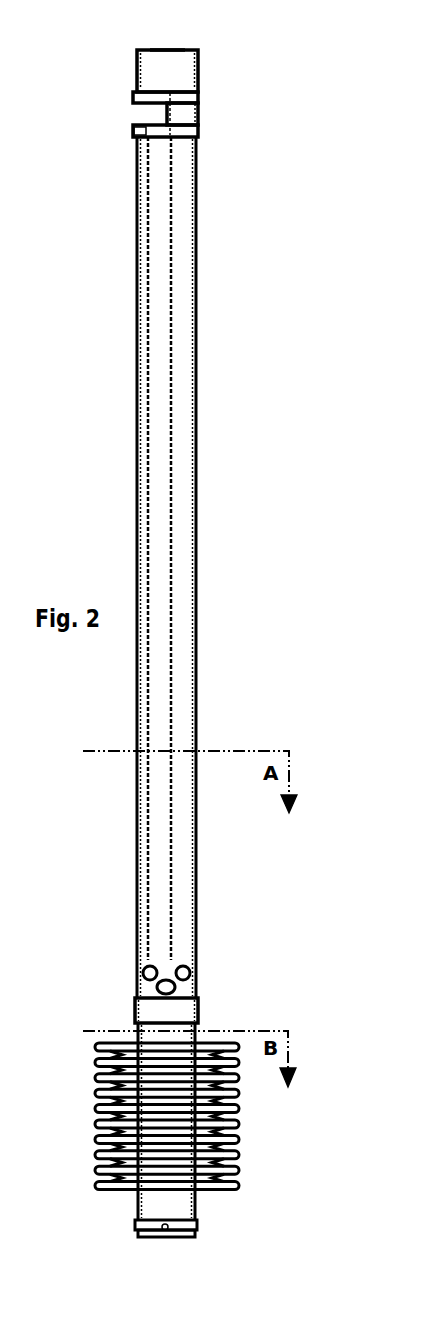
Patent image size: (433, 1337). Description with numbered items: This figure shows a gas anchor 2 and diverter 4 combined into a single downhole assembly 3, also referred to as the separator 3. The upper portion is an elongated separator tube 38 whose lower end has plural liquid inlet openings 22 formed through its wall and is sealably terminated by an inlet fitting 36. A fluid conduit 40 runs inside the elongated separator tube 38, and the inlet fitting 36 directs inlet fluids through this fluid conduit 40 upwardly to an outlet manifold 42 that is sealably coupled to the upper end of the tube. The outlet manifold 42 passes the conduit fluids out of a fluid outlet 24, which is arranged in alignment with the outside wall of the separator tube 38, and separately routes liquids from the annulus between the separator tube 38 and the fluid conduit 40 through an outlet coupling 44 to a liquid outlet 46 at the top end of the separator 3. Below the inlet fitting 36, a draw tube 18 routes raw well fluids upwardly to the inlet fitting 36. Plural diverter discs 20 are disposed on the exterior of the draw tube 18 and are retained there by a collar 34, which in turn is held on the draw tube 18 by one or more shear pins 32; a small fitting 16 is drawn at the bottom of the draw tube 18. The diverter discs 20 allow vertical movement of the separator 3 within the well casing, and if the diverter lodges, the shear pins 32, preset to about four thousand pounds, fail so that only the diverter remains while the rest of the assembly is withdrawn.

The gas anchor 2 is at (228, 332).
The assembly 3 is at (80, 433).
The diverter 4 is at (268, 1149).
The base end fitting 16 is at (155, 1237).
The draw tube 18 is at (138, 1210).
The diverter discs 20 is at (93, 1192).
The liquid inlet openings 22 is at (152, 984).
The fluid outlet 24 is at (135, 114).
The shear pins 32 is at (168, 1229).
The collar 34 is at (198, 1228).
The inlet fitting 36 is at (199, 1010).
The elongated separator tube 38 is at (196, 645).
The fluid conduit 40 is at (173, 532).
The outlet manifold 42 is at (198, 118).
The outlet coupling 44 is at (198, 77).
The liquid outlet 46 is at (163, 49).